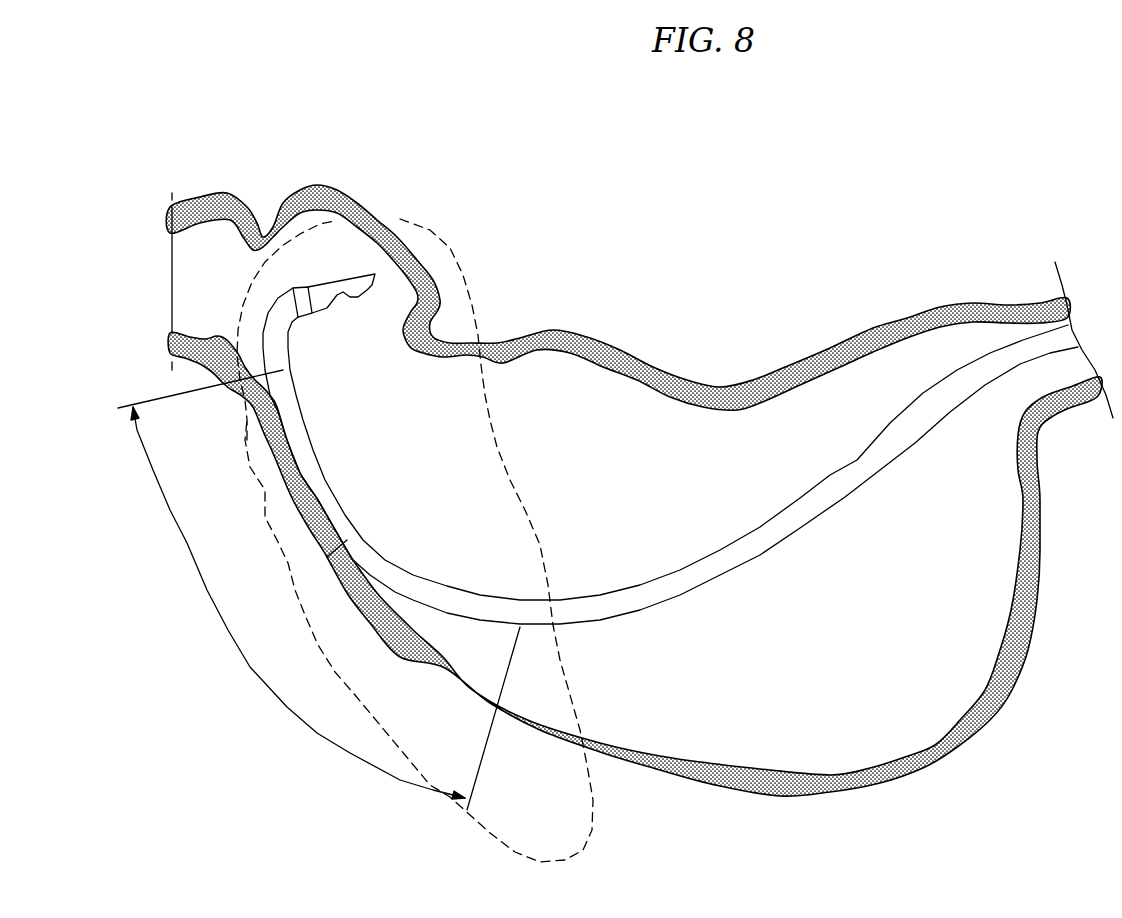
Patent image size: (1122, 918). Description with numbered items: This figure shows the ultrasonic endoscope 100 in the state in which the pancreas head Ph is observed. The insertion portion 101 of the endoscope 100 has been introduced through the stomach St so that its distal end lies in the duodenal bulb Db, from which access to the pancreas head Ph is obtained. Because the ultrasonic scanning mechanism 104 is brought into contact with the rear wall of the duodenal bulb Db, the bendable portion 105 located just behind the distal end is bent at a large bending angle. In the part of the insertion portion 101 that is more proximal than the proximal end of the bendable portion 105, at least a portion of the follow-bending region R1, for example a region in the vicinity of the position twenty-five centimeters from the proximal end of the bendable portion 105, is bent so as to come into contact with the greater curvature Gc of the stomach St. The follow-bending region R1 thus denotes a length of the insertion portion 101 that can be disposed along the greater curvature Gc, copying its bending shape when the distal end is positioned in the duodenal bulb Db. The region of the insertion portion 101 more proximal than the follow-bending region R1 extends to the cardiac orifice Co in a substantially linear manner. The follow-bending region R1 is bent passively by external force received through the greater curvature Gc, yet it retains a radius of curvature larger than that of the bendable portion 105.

The ultrasonic endoscope 100 is at (670, 456).
The insertion portion 101 is at (860, 496).
The ultrasonic scanning mechanism 104 is at (367, 291).
The bendable portion 105 is at (277, 315).
The duodenal bulb Db is at (338, 190).
The pancreas head Ph is at (443, 288).
The stomach St is at (883, 384).
The cardiac orifice Co is at (1023, 295).
The greater curvature Gc is at (325, 557).
The follow-bending region R1 is at (319, 590).